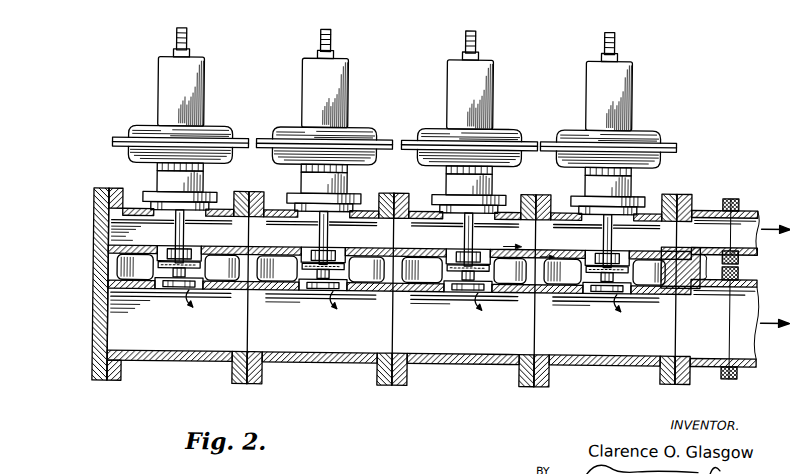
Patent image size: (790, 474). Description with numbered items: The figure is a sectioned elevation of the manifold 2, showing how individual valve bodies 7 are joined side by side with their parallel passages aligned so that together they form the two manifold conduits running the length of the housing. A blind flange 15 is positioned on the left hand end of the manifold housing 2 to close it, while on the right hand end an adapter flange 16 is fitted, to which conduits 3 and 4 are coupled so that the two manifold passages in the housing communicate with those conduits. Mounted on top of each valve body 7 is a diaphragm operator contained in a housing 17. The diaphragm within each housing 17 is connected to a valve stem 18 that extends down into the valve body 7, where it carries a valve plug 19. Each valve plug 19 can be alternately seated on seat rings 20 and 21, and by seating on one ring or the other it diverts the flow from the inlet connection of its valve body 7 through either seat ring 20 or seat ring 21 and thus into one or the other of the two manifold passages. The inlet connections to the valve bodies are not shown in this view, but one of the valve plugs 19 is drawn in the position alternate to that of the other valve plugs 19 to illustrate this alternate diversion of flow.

The manifold 2 is at (401, 421).
The conduit 3 is at (739, 362).
The conduit 4 is at (750, 205).
The valve body 7 is at (171, 362).
The blind flange 15 is at (93, 190).
The adapter flange 16 is at (690, 203).
The housing 17 is at (141, 123).
The valve stem 18 is at (185, 243).
The valve plug 19 is at (198, 265).
The seat ring 20 is at (161, 245).
The seat ring 21 is at (161, 289).